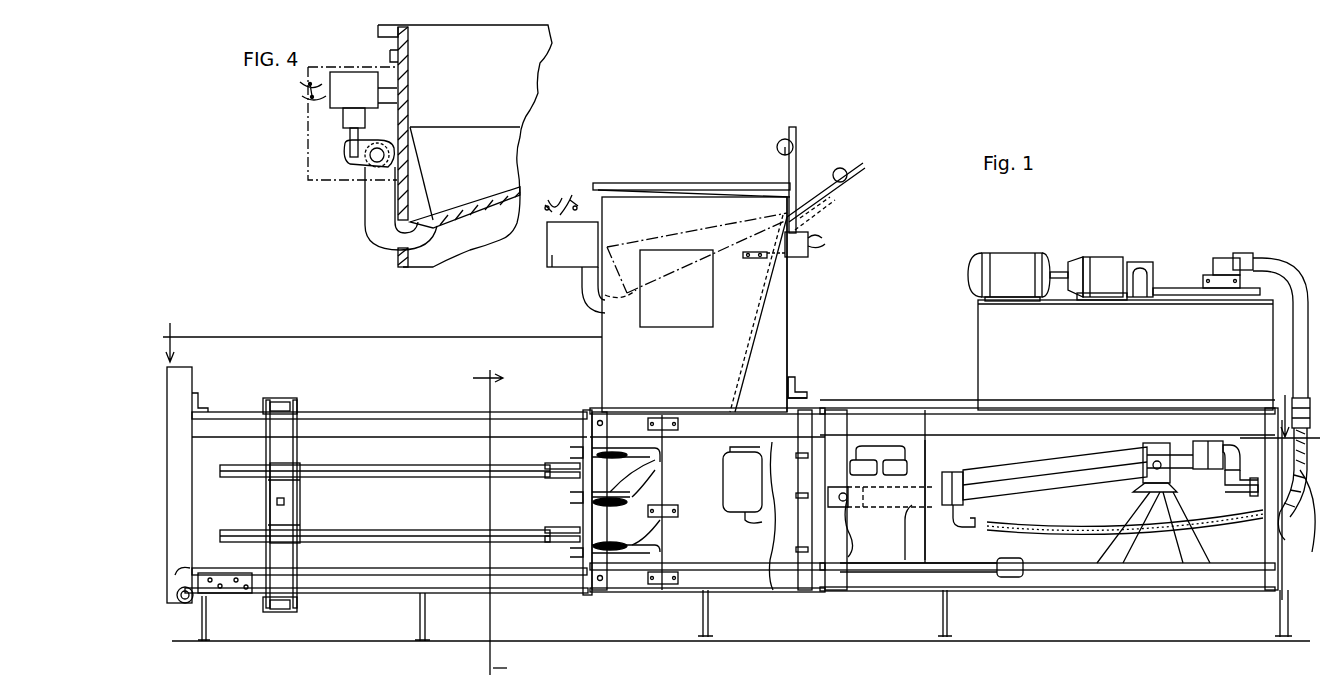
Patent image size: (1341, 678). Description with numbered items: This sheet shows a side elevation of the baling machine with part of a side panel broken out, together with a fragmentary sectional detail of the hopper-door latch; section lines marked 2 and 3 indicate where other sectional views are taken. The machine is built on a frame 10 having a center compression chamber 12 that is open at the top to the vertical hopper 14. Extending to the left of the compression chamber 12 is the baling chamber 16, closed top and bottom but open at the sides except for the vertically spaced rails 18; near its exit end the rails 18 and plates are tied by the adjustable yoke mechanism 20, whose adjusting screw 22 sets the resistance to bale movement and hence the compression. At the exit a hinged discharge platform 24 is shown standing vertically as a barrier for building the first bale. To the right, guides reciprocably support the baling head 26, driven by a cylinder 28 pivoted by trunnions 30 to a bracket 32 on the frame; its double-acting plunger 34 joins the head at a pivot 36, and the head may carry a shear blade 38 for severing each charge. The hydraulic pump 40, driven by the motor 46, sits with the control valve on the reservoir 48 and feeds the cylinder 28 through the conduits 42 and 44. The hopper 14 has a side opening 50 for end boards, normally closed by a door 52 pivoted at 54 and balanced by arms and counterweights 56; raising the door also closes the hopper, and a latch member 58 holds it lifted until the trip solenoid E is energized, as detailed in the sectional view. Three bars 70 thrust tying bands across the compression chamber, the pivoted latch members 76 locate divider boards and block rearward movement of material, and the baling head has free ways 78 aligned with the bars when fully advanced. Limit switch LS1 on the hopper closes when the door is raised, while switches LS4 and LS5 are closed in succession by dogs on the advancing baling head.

In FIG. 1, the section line 2-2 / hydraulic rod 2 is at (1032, 545).
In FIG. 1, the section line 3- 3 is at (497, 523).
In FIG. 1, the frame 10 is at (530, 412).
In FIG. 1, the compression chamber 12 is at (729, 560).
In FIG. 4, the vertical hopper 14 is at (540, 63).
In FIG. 1, the vertical hopper 14 is at (610, 320).
In FIG. 1, the baling chamber 16 is at (430, 438).
In FIG. 1, the rails 18 is at (450, 530).
In FIG. 1, the adjustable yoke mechanism 20 is at (290, 430).
In FIG. 1, the adjusting screw 22 is at (277, 500).
In FIG. 1, the discharge platform 24 is at (182, 515).
In FIG. 1, the baling head 26 is at (815, 580).
In FIG. 1, the cylinder 28 is at (1063, 465).
In FIG. 1, the trunnions 30 is at (1157, 460).
In FIG. 1, the bracket 32 is at (1112, 543).
In FIG. 1, the double-acting plunger 34 is at (932, 487).
In FIG. 1, the pivot 36 is at (852, 535).
In FIG. 1, the shear blade 38 is at (803, 412).
In FIG. 1, the hydraulic pump 40 is at (1103, 262).
In FIG. 1, the conduit 42 is at (1283, 500).
In FIG. 1, the conduit 44 is at (1312, 552).
In FIG. 1, the motor 46 is at (1005, 258).
In FIG. 1, the reservoir 48 is at (985, 335).
In FIG. 1, the opening 50 is at (750, 367).
In FIG. 4, the door 52 is at (510, 133).
In FIG. 1, the door 52 is at (783, 322).
In FIG. 1, the pivot 54 is at (797, 187).
In FIG. 1, the arms and counterweights 56 is at (790, 142).
In FIG. 4, the latch member 58 is at (378, 222).
In FIG. 1, the latch member 58 is at (575, 290).
In FIG. 1, the bars 70 is at (575, 545).
In FIG. 1, the latch members 76 is at (670, 486).
In FIG. 1, the free ways 78 is at (797, 500).
In FIG. 4, the trip solenoid E is at (302, 128).
In FIG. 1, the trip solenoid E is at (550, 277).
In FIG. 1, the limit switch LS1 is at (810, 243).
In FIG. 1, the limit switch LS4 is at (905, 562).
In FIG. 1, the limit switch LS5 is at (868, 470).